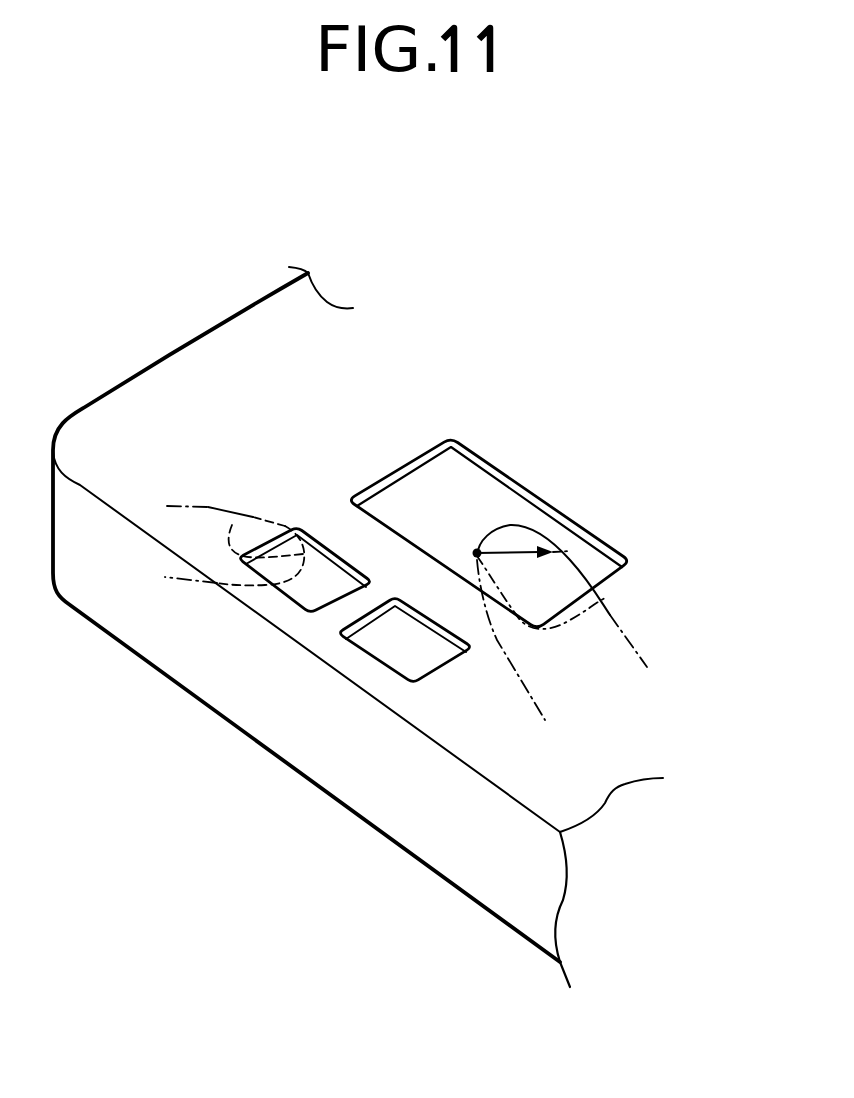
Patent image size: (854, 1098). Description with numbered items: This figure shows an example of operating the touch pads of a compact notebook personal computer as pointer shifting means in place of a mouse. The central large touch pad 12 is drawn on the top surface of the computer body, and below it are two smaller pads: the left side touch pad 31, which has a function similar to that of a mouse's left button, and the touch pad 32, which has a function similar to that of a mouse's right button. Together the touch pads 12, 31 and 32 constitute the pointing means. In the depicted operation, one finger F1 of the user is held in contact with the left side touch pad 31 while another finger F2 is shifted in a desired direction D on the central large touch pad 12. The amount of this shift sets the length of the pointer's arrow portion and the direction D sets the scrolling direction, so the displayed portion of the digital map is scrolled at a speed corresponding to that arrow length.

The touch pad 12 is at (410, 492).
The touch pad 31 is at (325, 568).
The touch pad 32 is at (438, 677).
The finger F1 is at (208, 507).
The finger F2 is at (613, 613).
The desired direction D is at (517, 550).